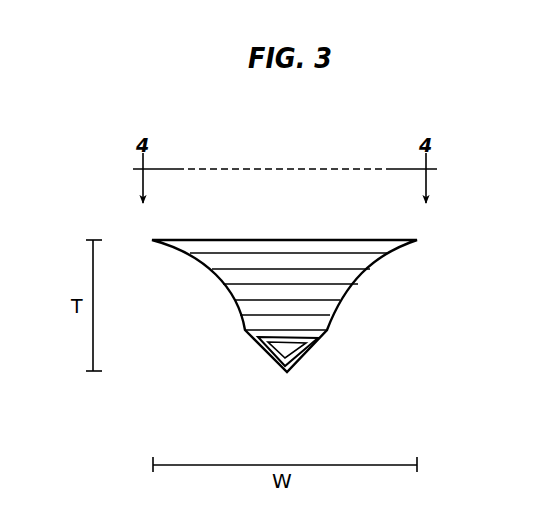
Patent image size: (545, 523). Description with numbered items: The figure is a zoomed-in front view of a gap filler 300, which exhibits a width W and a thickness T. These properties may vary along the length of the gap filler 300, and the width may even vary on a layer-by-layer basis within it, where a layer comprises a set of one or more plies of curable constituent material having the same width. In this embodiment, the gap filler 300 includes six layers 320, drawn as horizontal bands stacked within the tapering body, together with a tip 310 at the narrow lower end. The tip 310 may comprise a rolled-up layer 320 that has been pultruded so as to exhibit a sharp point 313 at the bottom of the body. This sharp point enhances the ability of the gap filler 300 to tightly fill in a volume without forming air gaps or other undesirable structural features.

The gap filler 300 is at (343, 325).
The tip 310 is at (250, 402).
The sharp point 313 is at (292, 376).
The layers 320 is at (383, 243).